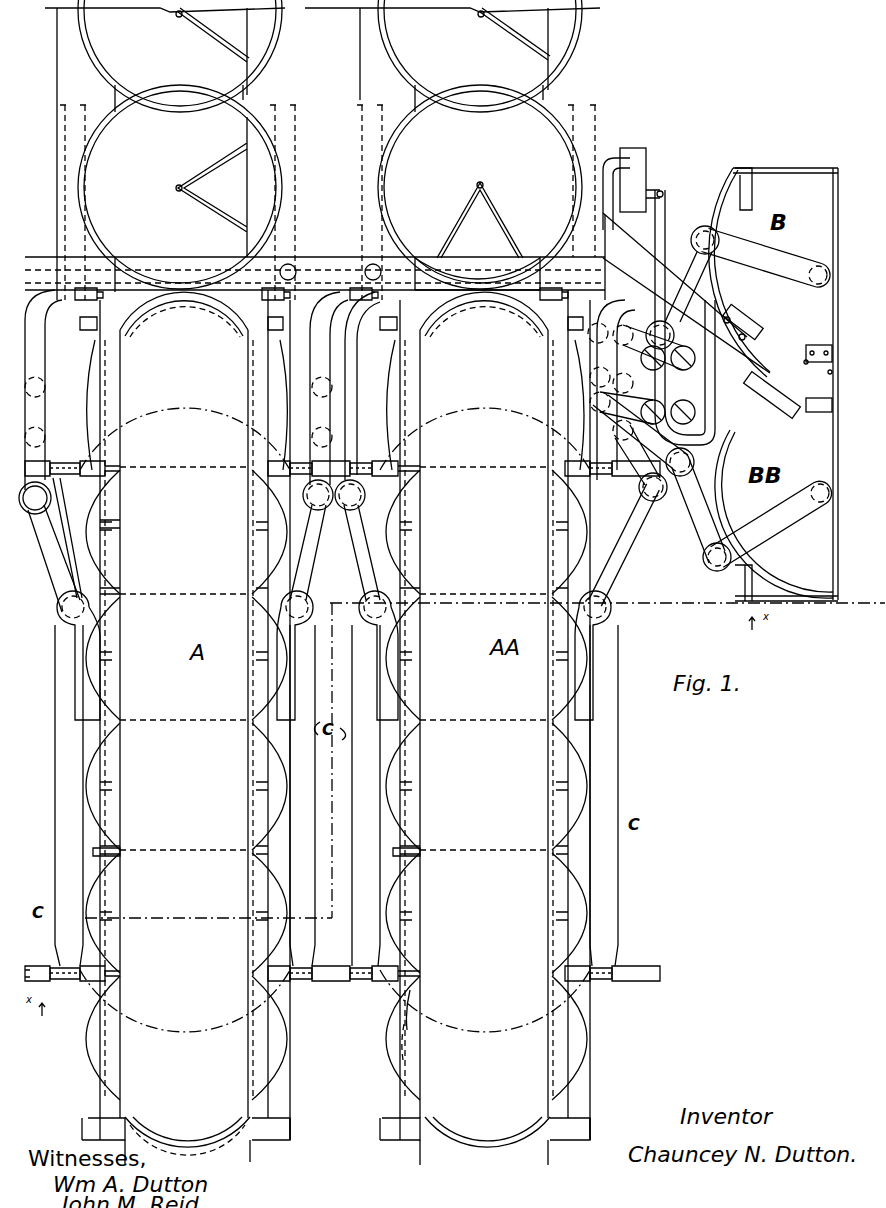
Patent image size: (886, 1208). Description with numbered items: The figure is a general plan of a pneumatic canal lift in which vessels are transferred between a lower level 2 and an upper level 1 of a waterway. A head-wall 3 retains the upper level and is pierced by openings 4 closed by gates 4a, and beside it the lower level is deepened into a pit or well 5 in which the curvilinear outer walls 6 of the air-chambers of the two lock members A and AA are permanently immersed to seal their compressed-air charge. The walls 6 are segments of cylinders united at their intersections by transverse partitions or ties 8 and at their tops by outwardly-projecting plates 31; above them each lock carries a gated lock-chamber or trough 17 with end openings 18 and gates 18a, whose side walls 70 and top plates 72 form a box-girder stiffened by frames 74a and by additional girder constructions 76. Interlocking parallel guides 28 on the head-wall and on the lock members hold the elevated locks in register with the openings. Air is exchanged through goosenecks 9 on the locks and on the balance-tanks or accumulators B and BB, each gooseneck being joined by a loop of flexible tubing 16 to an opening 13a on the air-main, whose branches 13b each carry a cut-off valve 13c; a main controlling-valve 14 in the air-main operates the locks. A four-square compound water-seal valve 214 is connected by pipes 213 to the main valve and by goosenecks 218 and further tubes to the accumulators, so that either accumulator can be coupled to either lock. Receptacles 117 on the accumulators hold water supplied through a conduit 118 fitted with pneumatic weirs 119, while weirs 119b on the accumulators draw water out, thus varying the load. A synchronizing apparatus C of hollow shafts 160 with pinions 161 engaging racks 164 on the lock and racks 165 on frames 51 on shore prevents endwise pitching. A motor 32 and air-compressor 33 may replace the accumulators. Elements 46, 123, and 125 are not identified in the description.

The upper level 1 is at (330, 144).
The lower level 2 is at (336, 1152).
The head-wall 3 is at (315, 273).
The openings 4 is at (327, 274).
The gates 4a is at (358, 198).
The pit or well 5 is at (336, 1114).
The curvilinear outer walls 6 is at (327, 582).
The transverse partitions or ties 8 is at (334, 591).
The goosenecks 9 is at (444, 473).
The opening 13a is at (35, 498).
The branches 13b is at (330, 390).
The cut-off valve 13c is at (356, 404).
The main controlling-valve 14 is at (641, 374).
The flexible tubing 16 is at (376, 432).
The lock-chamber or trough 17 is at (338, 715).
The end openings 18 is at (335, 719).
The gates 18a is at (335, 725).
The interlocking parallel guides 28 is at (329, 309).
The plates 31 is at (335, 680).
The motor 32 is at (633, 189).
The air-compressor 33 is at (642, 192).
The drum partition arm 46 is at (371, 51).
The frames 51 is at (664, 968).
The side walls 70 is at (416, 1036).
The top plates 72 is at (416, 1056).
The frames 74a is at (252, 851).
The girder constructions 76 is at (334, 722).
The receptacles 117 is at (727, 506).
The channel or conduit 118 is at (686, 293).
The pneumatic weirs 119 is at (762, 361).
The weirs 119b is at (816, 378).
The pin 123 is at (766, 351).
The pin 125 is at (790, 373).
The synchronizing-shafts 160 is at (360, 719).
The pinions 161 is at (331, 720).
The racks 164 is at (335, 721).
The racks 165 is at (342, 721).
The pipes 213 is at (650, 385).
The four-square compound water-seal valve 214 is at (685, 317).
The gooseneck 218 is at (670, 398).